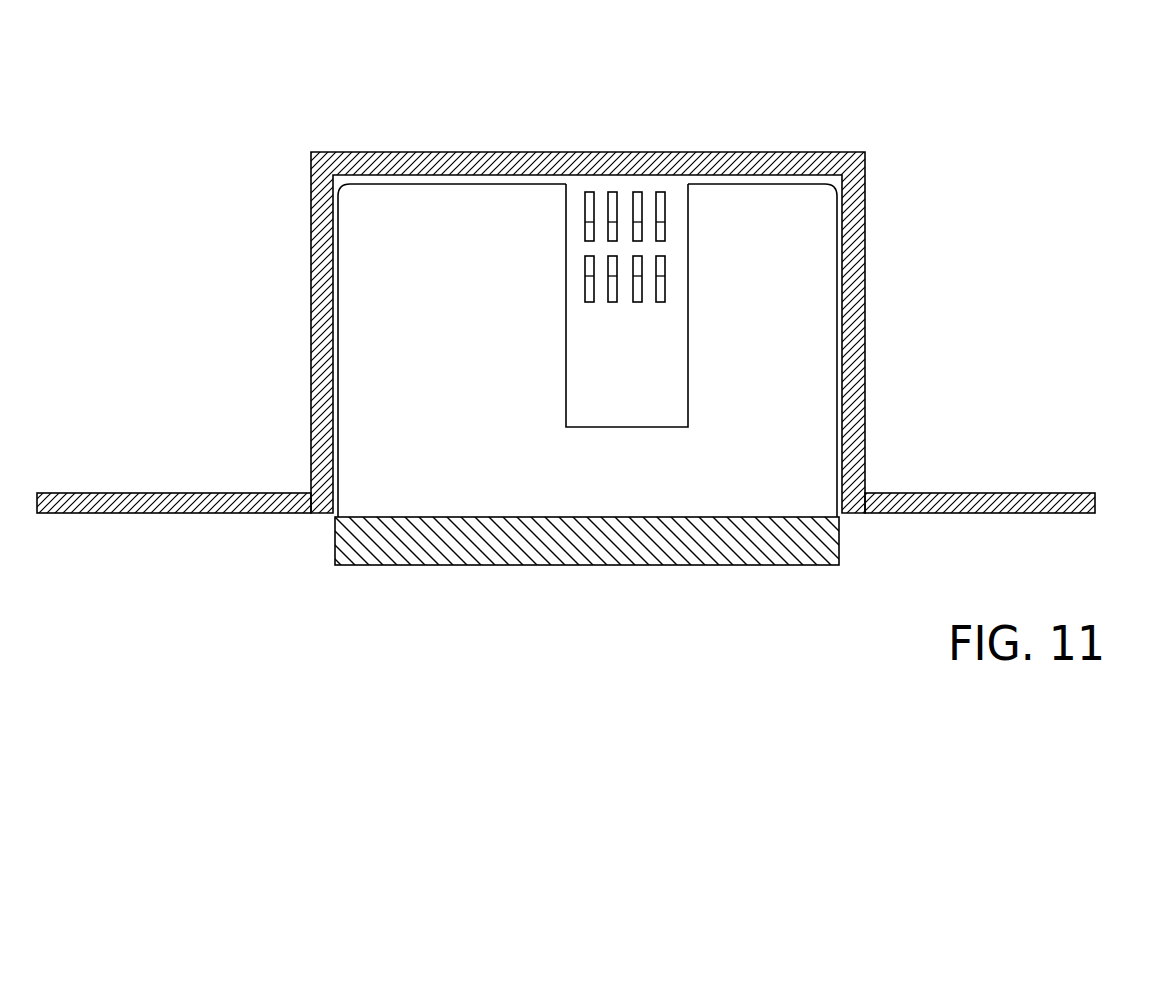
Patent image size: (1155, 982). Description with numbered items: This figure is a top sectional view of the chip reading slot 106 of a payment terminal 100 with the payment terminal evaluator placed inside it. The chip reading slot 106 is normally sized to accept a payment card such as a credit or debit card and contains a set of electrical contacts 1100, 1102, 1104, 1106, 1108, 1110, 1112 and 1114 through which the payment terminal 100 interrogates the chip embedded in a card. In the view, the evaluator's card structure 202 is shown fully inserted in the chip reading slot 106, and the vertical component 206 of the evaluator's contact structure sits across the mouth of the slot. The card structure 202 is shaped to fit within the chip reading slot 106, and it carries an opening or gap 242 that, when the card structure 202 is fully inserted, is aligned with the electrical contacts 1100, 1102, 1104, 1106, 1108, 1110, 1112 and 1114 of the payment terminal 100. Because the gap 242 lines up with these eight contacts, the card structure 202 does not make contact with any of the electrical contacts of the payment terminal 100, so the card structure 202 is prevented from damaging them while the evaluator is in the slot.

The payment terminal 100 is at (1030, 497).
The chip reading slot 106 is at (394, 180).
The card structure 202 is at (393, 460).
The vertical component 206 is at (545, 538).
The opening or gap 242 is at (687, 224).
The electrical contact 1100 is at (590, 200).
The electrical contact 1102 is at (611, 200).
The electrical contact 1104 is at (639, 200).
The electrical contact 1106 is at (661, 200).
The electrical contact 1108 is at (590, 292).
The electrical contact 1110 is at (612, 297).
The electrical contact 1112 is at (637, 292).
The electrical contact 1114 is at (666, 282).